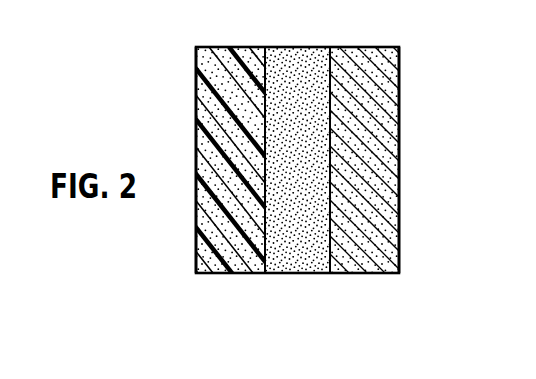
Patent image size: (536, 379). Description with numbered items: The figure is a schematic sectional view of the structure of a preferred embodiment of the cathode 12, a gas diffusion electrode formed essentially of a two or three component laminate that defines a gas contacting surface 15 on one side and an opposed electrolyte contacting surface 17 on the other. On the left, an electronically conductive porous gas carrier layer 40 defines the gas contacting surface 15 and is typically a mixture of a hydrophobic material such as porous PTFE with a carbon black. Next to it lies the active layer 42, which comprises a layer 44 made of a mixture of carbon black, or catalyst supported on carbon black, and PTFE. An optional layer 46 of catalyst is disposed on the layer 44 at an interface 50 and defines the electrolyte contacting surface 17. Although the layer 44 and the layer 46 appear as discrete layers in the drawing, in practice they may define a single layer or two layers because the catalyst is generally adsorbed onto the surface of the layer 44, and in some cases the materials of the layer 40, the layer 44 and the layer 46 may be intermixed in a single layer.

The cathode 12 is at (368, 38).
The gas contacting surface 15 is at (195, 77).
The electrolyte contacting surface 17 is at (400, 133).
The porous gas carrier layer 40 is at (196, 222).
The active layer 42 is at (329, 169).
The layer of carbon black and PTFE 44 is at (293, 60).
The catalyst layer 46 is at (377, 223).
The interface 50 is at (346, 57).